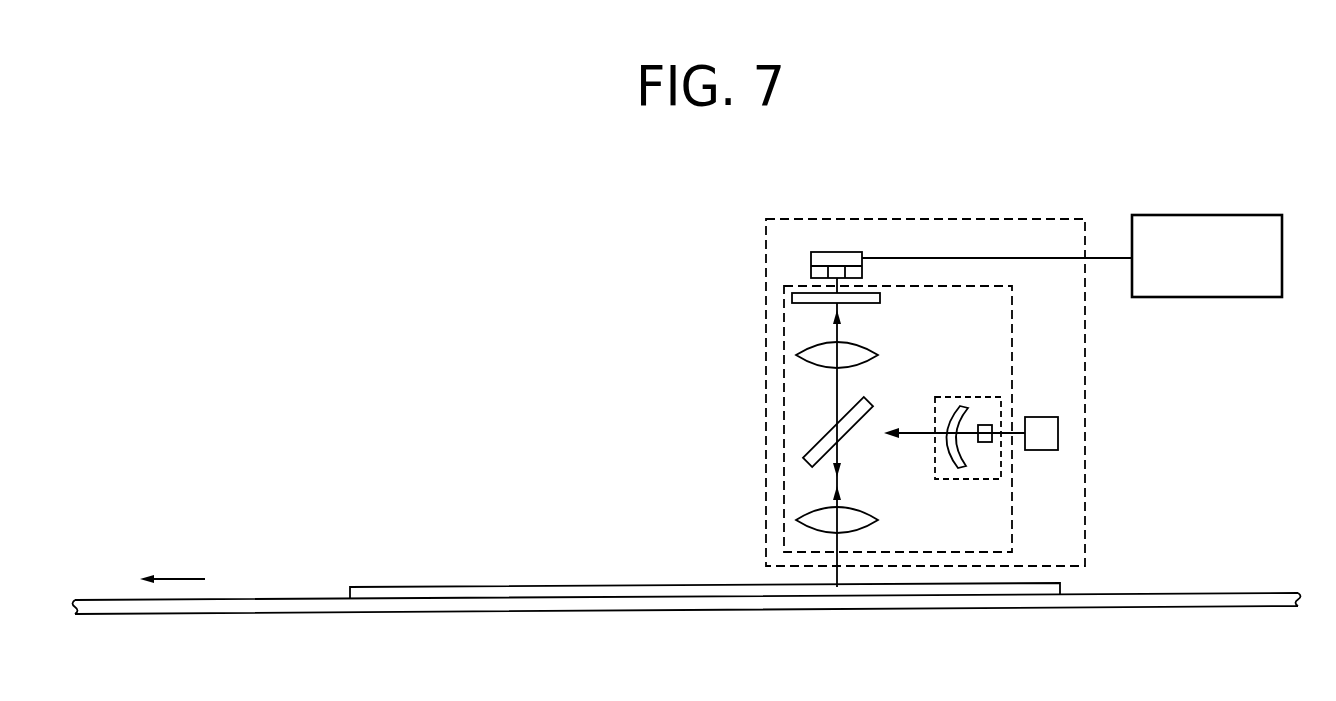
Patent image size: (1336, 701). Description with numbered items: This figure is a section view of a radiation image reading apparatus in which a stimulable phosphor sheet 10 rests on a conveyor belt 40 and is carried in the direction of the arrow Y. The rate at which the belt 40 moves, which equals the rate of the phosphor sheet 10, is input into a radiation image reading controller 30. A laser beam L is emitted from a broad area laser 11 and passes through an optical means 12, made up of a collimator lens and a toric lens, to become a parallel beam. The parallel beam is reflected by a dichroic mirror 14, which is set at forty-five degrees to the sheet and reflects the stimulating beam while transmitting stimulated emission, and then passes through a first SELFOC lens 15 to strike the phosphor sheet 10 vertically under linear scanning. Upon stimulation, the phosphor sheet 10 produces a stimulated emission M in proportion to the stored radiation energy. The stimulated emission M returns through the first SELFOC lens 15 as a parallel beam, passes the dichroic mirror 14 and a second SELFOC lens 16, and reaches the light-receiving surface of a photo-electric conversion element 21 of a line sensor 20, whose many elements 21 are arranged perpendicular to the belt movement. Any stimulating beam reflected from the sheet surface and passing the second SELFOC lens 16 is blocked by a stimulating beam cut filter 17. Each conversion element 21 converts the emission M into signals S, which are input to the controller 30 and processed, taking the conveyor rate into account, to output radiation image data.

The stimulable phosphor sheet 10 is at (503, 587).
The broad area laser 11 is at (1058, 432).
The optical means 12 is at (961, 398).
The dichroic mirror 14 is at (812, 448).
The first SELFOC lens 15 is at (875, 524).
The second SELFOC lens 16 is at (812, 345).
The stimulating beam cut filter 17 is at (792, 298).
The line sensor 20 is at (784, 251).
The photo-electric conversion element 21 is at (811, 270).
The radiation image reading controller 30 is at (1202, 215).
The conveyor belt 40 is at (1160, 593).
The signals S is at (1042, 258).
The laser beam L is at (917, 432).
The stimulated emission M is at (837, 390).
The direction of movement Y is at (172, 562).